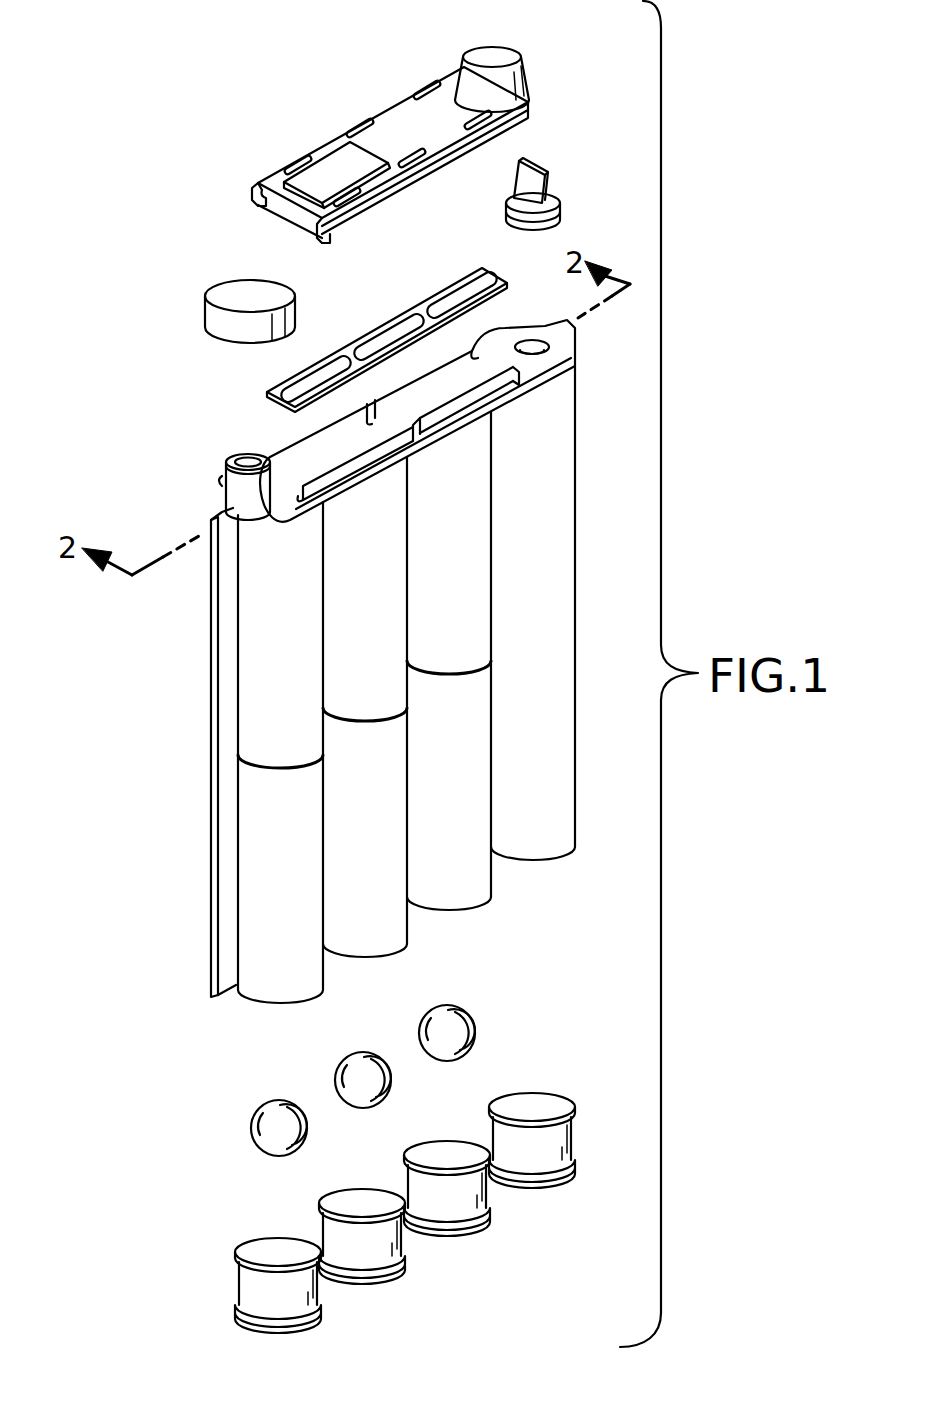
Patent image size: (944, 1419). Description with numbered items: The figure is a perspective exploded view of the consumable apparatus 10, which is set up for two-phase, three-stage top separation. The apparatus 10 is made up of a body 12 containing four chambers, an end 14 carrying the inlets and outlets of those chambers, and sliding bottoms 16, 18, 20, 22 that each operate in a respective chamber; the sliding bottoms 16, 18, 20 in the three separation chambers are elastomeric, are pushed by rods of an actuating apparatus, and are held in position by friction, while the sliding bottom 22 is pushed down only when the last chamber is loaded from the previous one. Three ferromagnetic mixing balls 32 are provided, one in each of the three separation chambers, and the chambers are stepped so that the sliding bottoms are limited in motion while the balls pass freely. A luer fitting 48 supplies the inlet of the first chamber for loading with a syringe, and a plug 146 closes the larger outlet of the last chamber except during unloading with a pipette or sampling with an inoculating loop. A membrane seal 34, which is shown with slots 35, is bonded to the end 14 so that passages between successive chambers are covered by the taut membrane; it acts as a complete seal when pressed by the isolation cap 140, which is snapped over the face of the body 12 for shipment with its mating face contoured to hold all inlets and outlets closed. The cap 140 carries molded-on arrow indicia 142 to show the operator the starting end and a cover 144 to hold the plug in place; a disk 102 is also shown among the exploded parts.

The apparatus 10 is at (750, 143).
The body 12 is at (577, 503).
The end 14 is at (562, 372).
The sliding bottom 16 is at (262, 1250).
The sliding bottom 18 is at (346, 1202).
The sliding bottom 20 is at (428, 1154).
The sliding bottom 22 is at (512, 1106).
The mixing balls 32 is at (283, 1100).
The membrane seal 34 is at (358, 340).
The slots 35 is at (383, 352).
The luer fitting 48 is at (232, 459).
The disk 102 is at (216, 290).
The isolation cap 140 is at (331, 165).
The arrow indicia 142 is at (360, 155).
The cover 144 is at (505, 55).
The plug 146 is at (546, 173).